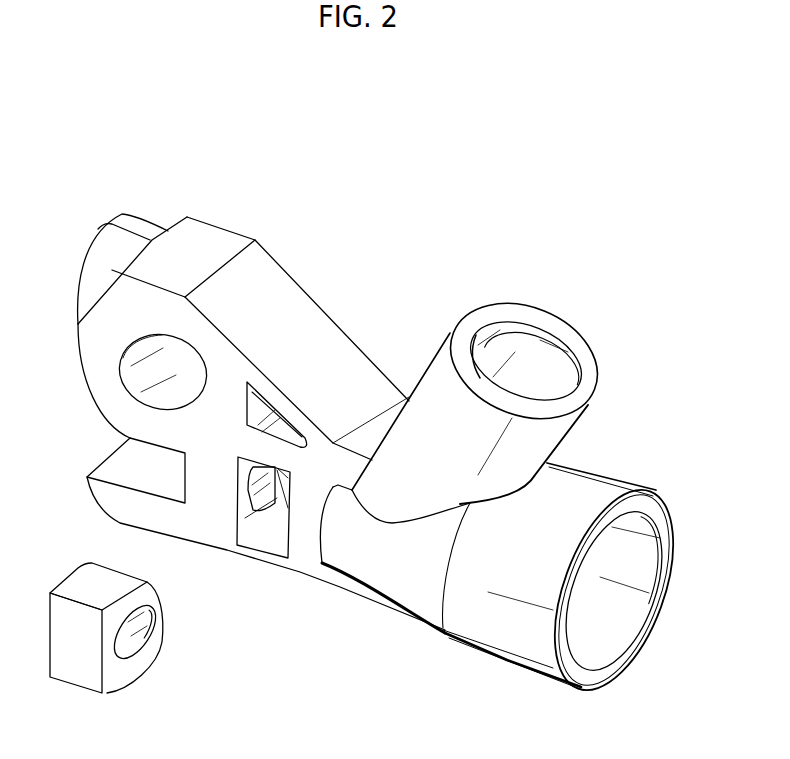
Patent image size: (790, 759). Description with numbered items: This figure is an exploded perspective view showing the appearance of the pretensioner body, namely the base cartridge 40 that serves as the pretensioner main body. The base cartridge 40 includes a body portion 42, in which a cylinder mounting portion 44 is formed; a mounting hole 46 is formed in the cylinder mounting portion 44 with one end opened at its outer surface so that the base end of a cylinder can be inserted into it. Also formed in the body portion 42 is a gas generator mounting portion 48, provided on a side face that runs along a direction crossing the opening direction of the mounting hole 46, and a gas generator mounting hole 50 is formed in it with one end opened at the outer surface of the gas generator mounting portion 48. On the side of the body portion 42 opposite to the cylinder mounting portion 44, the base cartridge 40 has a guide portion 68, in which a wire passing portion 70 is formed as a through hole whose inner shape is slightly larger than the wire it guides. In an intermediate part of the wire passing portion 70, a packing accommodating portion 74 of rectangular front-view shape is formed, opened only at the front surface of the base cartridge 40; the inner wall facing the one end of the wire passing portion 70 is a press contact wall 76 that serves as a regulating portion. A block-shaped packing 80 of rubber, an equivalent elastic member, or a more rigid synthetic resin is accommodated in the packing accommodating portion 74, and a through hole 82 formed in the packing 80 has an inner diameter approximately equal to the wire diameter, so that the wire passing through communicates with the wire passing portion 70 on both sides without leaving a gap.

The base cartridge 40 is at (456, 181).
The guide portion 68 is at (303, 574).
The wire passing portion 70 is at (253, 537).
The packing accommodating portion 74 is at (229, 540).
The gas generator mounting portion 48 is at (446, 343).
The gas generator mounting hole 50 is at (530, 372).
The body portion 42 is at (380, 578).
The press contact wall 76 is at (318, 540).
The cylinder mounting portion 44 is at (518, 640).
The mounting hole 46 is at (607, 642).
The packing 80 is at (76, 673).
The through hole 82 is at (153, 639).